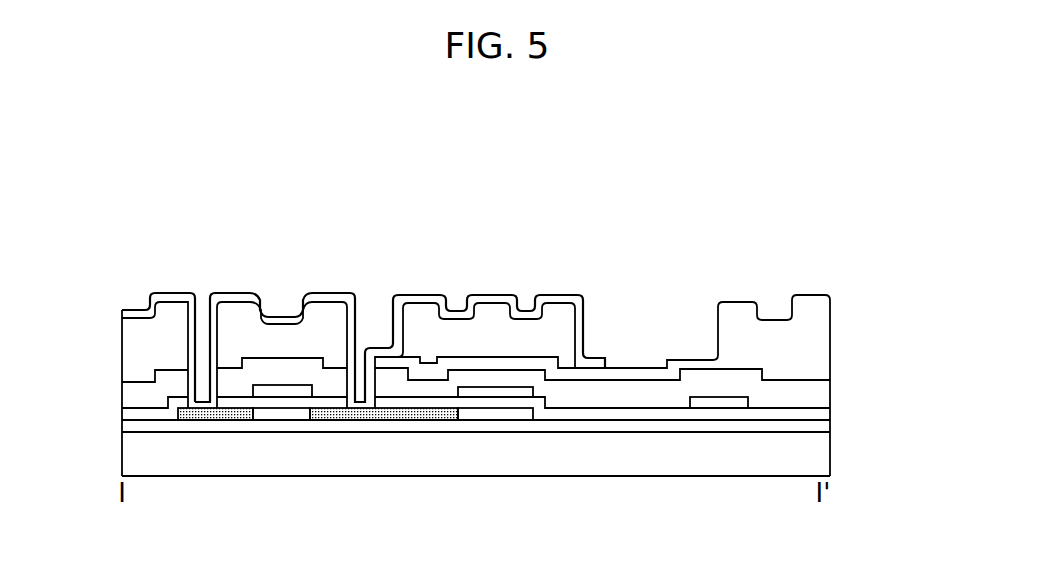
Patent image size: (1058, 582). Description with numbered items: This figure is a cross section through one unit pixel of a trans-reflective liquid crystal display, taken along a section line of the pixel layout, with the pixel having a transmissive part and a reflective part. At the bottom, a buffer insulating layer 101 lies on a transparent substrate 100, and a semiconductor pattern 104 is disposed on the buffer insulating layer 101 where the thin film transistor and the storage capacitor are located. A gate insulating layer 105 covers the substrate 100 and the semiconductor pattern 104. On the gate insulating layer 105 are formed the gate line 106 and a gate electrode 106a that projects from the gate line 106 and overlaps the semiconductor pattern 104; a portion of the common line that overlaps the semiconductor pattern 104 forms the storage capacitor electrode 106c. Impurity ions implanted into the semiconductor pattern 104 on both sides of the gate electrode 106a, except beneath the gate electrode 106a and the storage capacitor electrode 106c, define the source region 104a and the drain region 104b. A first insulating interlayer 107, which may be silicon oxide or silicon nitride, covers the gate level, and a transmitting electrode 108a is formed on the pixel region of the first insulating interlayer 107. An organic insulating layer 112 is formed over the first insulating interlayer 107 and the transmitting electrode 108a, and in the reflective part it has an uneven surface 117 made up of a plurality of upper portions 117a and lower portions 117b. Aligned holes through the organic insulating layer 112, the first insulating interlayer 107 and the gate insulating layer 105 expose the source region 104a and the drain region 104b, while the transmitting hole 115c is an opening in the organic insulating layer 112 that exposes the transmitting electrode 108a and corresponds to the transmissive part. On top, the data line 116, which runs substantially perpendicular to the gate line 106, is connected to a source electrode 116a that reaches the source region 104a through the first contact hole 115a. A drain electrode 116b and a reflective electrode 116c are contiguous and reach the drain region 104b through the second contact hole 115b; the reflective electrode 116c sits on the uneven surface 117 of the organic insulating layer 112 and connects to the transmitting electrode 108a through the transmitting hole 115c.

The transparent substrate 100 is at (823, 452).
The buffer insulating layer 101 is at (823, 425).
The semiconductor pattern 104 is at (288, 416).
The source region 104a is at (221, 416).
The drain region 104b is at (351, 416).
The gate insulating layer 105 is at (597, 412).
The gate line 106 is at (720, 402).
The gate electrode 106a is at (278, 392).
The storage capacitor electrode 106c is at (488, 392).
The first insulating interlayer 107 is at (823, 395).
The transmitting electrode 108a is at (493, 365).
The organic insulating layer 112 is at (492, 295).
The first contact hole 115a is at (199, 287).
The second contact hole 115b is at (380, 294).
The transmitting hole 115c is at (623, 318).
The data line 116 is at (174, 298).
The source electrode 116a is at (250, 297).
The drain electrode 116b is at (326, 297).
The reflective electrode 116c is at (560, 295).
The uneven surface 117 is at (549, 204).
The upper portions 117a is at (423, 280).
The lower portions 117b is at (455, 293).